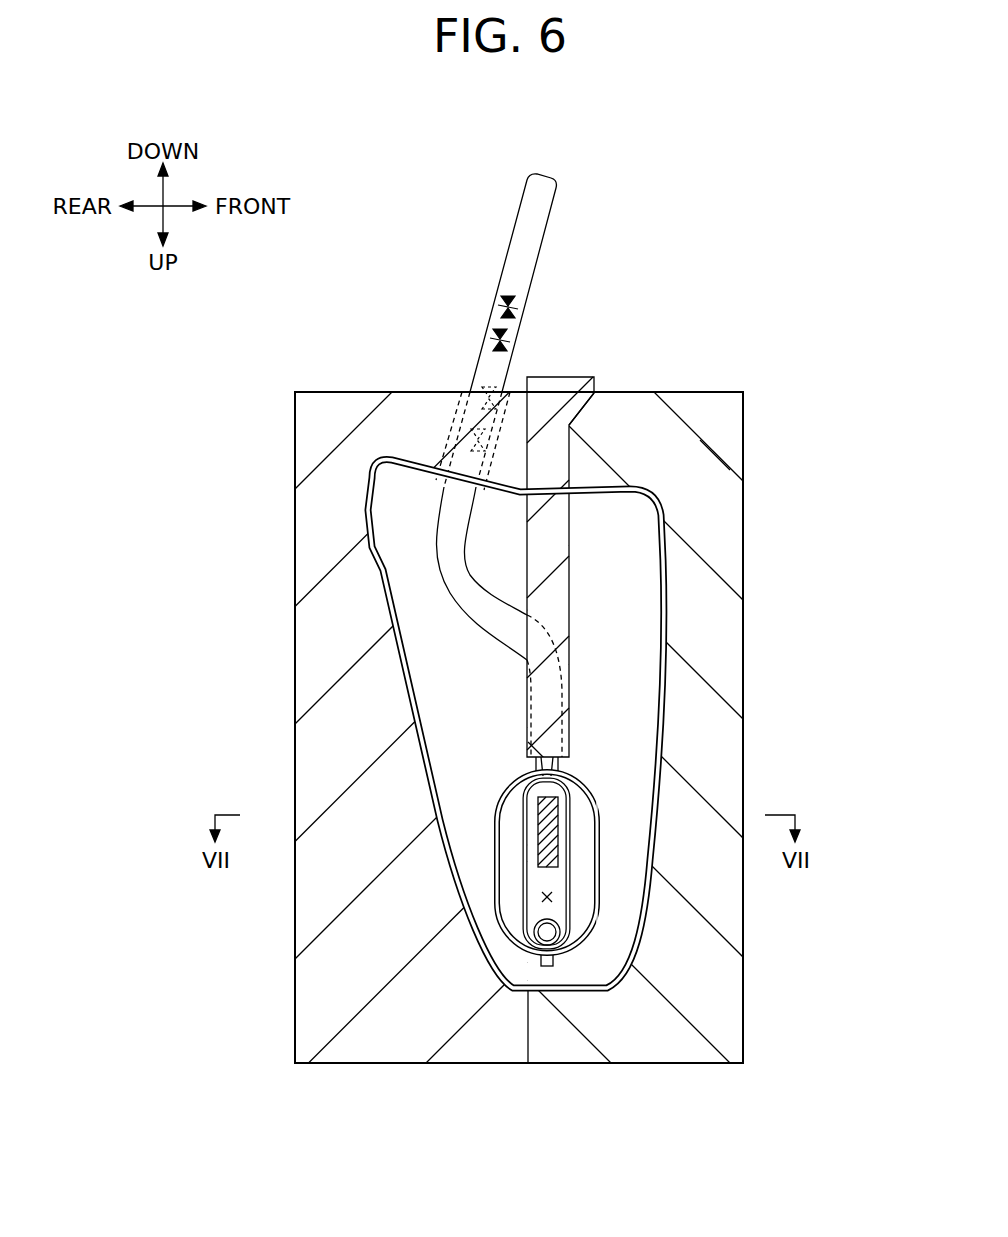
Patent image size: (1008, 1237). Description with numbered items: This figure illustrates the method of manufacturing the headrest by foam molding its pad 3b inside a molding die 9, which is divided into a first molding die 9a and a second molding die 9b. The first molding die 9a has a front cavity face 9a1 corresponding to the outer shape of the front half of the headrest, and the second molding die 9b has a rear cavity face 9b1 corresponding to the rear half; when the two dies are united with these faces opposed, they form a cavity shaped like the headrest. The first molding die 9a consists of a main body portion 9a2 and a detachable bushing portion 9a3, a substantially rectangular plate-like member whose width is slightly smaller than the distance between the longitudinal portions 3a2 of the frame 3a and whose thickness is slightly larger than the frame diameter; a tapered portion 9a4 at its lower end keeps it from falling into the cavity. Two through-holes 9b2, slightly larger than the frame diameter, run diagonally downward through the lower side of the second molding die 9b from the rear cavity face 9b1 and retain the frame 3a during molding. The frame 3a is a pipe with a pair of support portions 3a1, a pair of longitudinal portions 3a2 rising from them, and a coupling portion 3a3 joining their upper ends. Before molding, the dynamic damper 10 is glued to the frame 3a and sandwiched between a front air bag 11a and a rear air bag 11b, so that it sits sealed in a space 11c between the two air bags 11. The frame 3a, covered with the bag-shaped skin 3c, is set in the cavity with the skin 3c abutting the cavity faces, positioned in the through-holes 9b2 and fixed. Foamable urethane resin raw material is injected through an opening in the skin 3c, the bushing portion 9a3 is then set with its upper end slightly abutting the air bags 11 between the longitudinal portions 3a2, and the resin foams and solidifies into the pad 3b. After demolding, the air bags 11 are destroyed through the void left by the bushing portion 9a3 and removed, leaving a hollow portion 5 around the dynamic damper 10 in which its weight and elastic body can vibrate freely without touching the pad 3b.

The frame 3a is at (407, 649).
The support portion 3a1 is at (528, 212).
The longitudinal portion 3a2 is at (480, 627).
The coupling portion 3a3 is at (578, 952).
The pad 3b is at (445, 707).
The skin 3c is at (410, 745).
The hollow portion 5 is at (575, 885).
The molding die 9 is at (343, 384).
The first molding die 9a is at (680, 1045).
The front cavity face 9a1 is at (662, 700).
The main body portion 9a2 is at (710, 417).
The bushing portion 9a3 is at (553, 400).
The tapered portion 9a4 is at (583, 413).
The second molding die 9b is at (385, 1045).
The rear cavity face 9b1 is at (405, 684).
The through-hole 9b2 is at (472, 413).
The dynamic damper 10 is at (528, 831).
The air bag 11 is at (516, 853).
The front air bag 11a is at (595, 795).
The rear air bag 11b is at (520, 795).
The space 11c is at (543, 896).